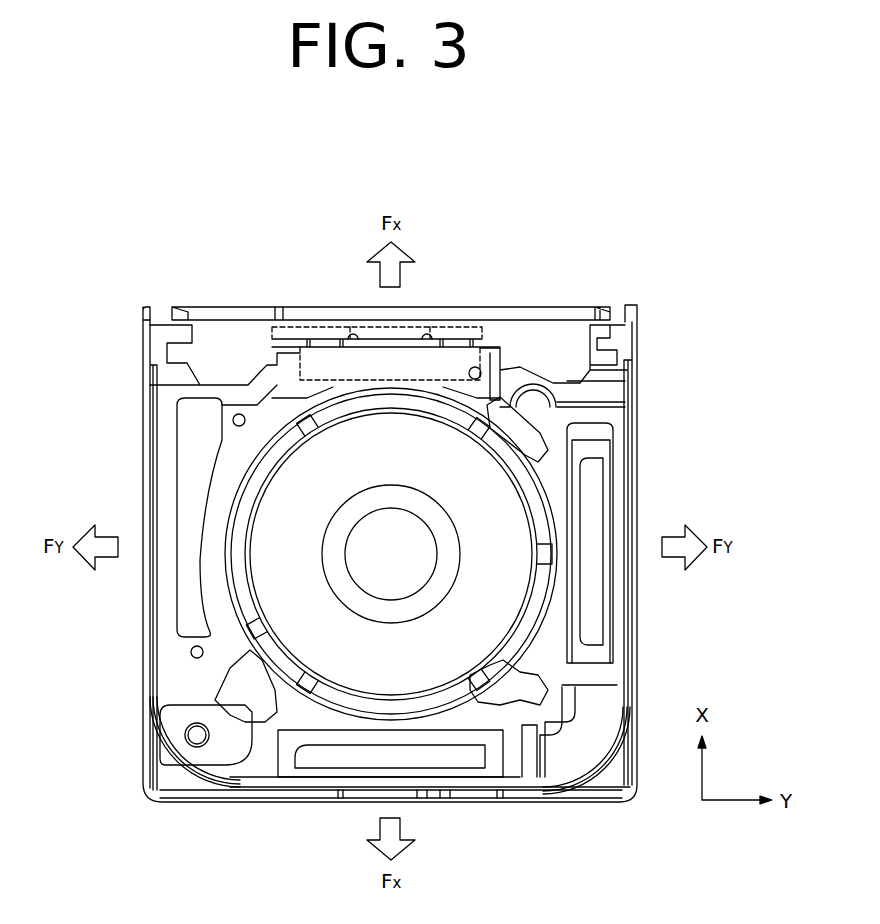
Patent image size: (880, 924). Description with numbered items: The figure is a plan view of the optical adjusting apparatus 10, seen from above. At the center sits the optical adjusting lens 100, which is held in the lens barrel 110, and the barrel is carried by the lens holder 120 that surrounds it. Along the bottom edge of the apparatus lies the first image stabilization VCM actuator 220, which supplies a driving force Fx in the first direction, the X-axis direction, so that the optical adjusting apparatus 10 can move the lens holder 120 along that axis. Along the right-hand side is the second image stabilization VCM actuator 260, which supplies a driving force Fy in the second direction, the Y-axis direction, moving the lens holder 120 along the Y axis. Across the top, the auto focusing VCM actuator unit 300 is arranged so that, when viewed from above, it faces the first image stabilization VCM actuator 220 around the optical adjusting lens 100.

The optical adjusting apparatus 10 is at (206, 234).
The optical adjusting lens 100 is at (377, 580).
The lens barrel 110 is at (277, 588).
The lens holder 120 is at (552, 465).
The first image stabilization VCM actuator 220 is at (455, 774).
The second image stabilization VCM actuator 260 is at (613, 501).
The auto focusing VCM actuator unit 300 is at (451, 346).